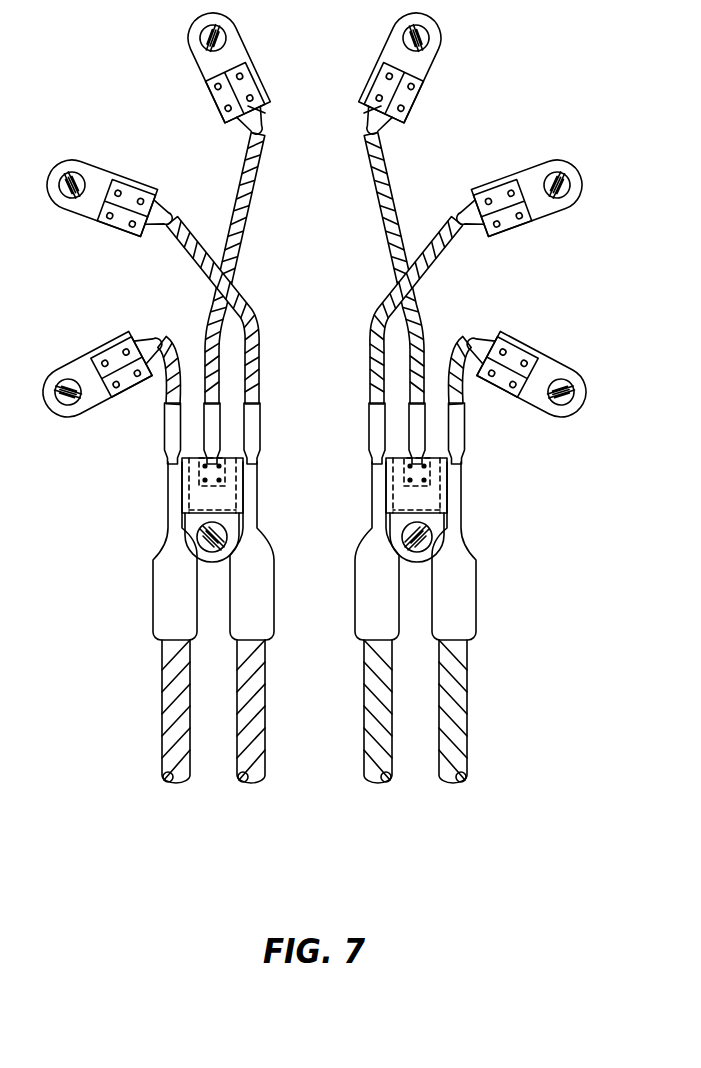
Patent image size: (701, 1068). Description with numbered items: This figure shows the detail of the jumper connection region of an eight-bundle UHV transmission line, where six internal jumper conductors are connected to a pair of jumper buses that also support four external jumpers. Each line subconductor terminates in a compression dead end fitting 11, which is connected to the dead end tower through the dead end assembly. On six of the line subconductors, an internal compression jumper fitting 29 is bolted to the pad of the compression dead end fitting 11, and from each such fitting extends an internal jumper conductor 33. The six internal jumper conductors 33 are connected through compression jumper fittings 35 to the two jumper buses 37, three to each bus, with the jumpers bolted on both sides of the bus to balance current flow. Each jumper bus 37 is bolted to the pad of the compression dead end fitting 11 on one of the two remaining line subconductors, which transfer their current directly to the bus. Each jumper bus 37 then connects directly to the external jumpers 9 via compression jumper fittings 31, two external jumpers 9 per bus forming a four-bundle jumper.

The external jumper subconductor 9 is at (168, 713).
The compression dead end fitting 11 is at (232, 58).
The internal compression jumper fitting 29 is at (254, 107).
The compression jumper fitting 31 is at (168, 590).
The internal jumper conductor 33 is at (240, 232).
The compression jumper fitting 35 is at (210, 427).
The jumper bus 37 is at (240, 495).